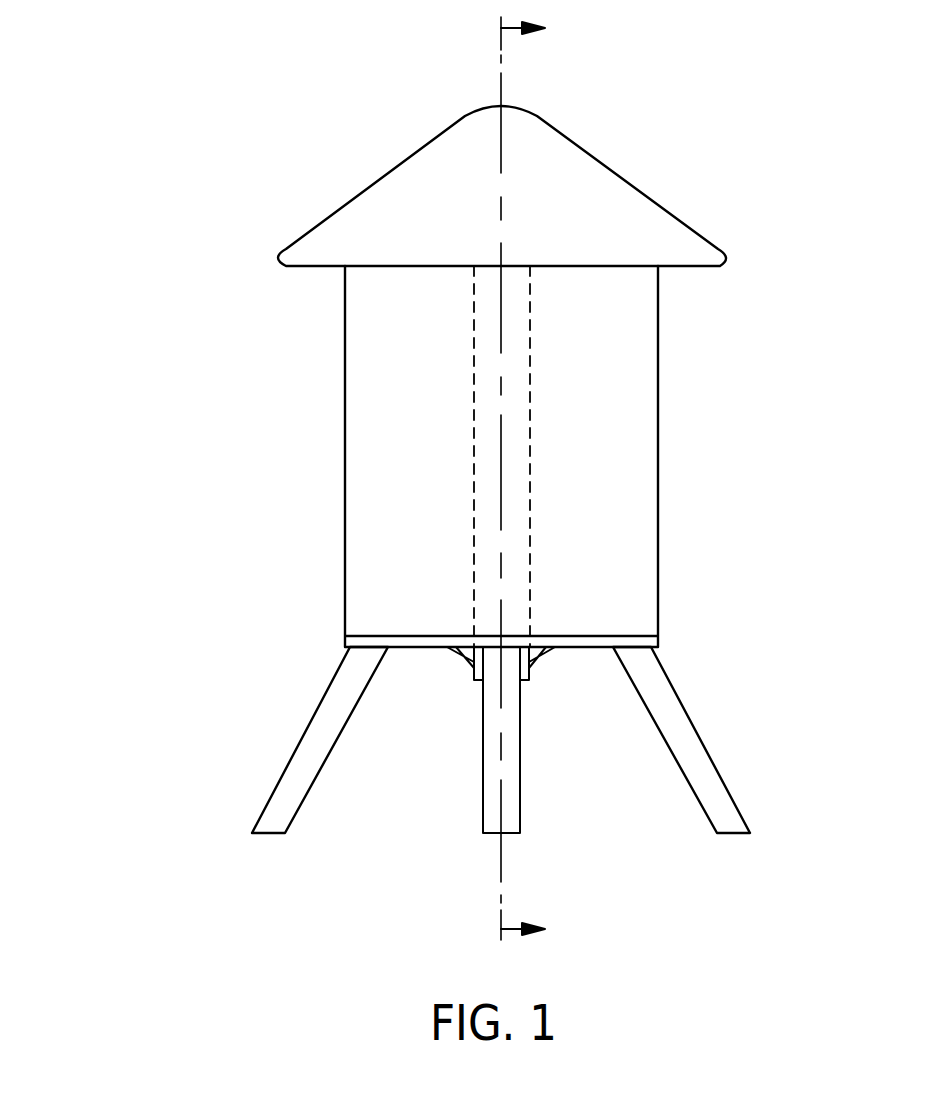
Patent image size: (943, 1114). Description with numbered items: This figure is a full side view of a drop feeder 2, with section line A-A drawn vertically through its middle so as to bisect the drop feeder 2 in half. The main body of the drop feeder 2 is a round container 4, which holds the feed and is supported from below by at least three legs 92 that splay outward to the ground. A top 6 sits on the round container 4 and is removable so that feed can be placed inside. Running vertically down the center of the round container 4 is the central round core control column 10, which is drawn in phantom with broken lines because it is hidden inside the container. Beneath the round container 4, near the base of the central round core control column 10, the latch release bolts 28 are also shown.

The drop feeder 2 is at (435, 481).
The round container 4 is at (658, 357).
The top 6 is at (645, 193).
The central round core control column 10 is at (530, 538).
The latch release bolts 28 is at (453, 660).
The legs 92 is at (695, 728).